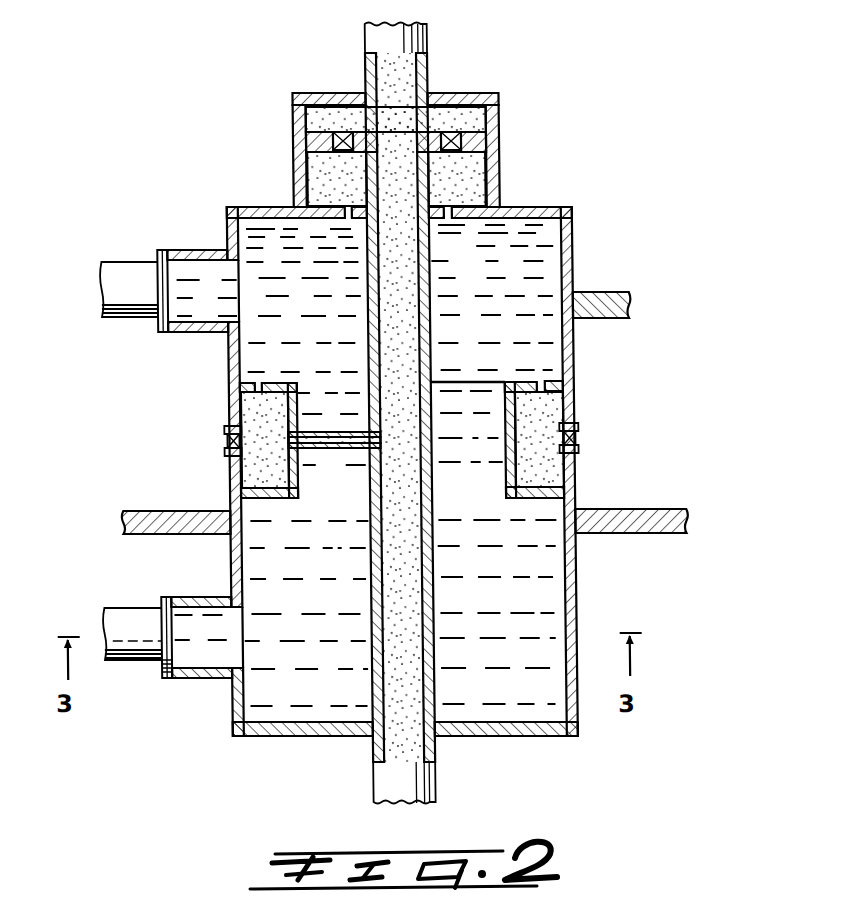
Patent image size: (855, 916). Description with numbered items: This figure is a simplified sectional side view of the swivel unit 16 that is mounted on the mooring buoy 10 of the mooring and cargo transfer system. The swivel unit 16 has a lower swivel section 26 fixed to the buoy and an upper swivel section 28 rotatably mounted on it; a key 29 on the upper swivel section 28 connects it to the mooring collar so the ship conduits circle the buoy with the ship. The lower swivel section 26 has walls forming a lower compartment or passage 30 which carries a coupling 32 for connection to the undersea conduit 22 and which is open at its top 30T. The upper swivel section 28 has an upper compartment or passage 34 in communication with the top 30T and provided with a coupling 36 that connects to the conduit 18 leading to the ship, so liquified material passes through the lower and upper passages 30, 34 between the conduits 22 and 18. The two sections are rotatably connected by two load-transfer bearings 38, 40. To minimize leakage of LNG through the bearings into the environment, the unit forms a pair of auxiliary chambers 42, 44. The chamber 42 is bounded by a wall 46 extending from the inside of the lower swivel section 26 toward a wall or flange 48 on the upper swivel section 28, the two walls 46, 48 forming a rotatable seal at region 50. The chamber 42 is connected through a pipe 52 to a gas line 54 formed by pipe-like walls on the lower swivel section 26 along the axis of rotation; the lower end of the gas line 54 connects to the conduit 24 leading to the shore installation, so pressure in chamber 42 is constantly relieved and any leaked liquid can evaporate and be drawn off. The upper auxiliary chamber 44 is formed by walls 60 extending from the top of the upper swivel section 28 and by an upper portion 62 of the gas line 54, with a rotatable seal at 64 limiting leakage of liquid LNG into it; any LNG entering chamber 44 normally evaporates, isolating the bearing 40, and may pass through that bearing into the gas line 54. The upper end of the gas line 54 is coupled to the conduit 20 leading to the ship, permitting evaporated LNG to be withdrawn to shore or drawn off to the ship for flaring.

The mooring buoy 10 is at (669, 507).
The swivel unit 16 is at (527, 85).
The conduit 18 is at (118, 268).
The conduit 20 is at (370, 40).
The conduit 22 is at (124, 614).
The conduit 24 is at (428, 788).
The lower swivel section 26 is at (560, 740).
The upper swivel section 28 is at (573, 210).
The key 29 is at (611, 293).
The lower compartment or passage 30 is at (513, 710).
The top of lower passage 30T is at (486, 386).
The coupling 32 is at (199, 680).
The upper compartment or passage 34 is at (560, 243).
The coupling 36 is at (186, 249).
The bearing 38 is at (580, 438).
The bearing 40 is at (337, 137).
The auxiliary chamber 42 is at (546, 468).
The auxiliary chamber 44 is at (477, 178).
The wall 46 is at (553, 491).
The wall or flange 48 is at (556, 388).
The rotatable seal region 50 is at (541, 392).
The pipe 52 is at (334, 446).
The gas line 54 is at (370, 598).
The walls 60 is at (506, 166).
The upper portion of gas line 62 is at (432, 198).
The rotatable seal 64 is at (452, 218).